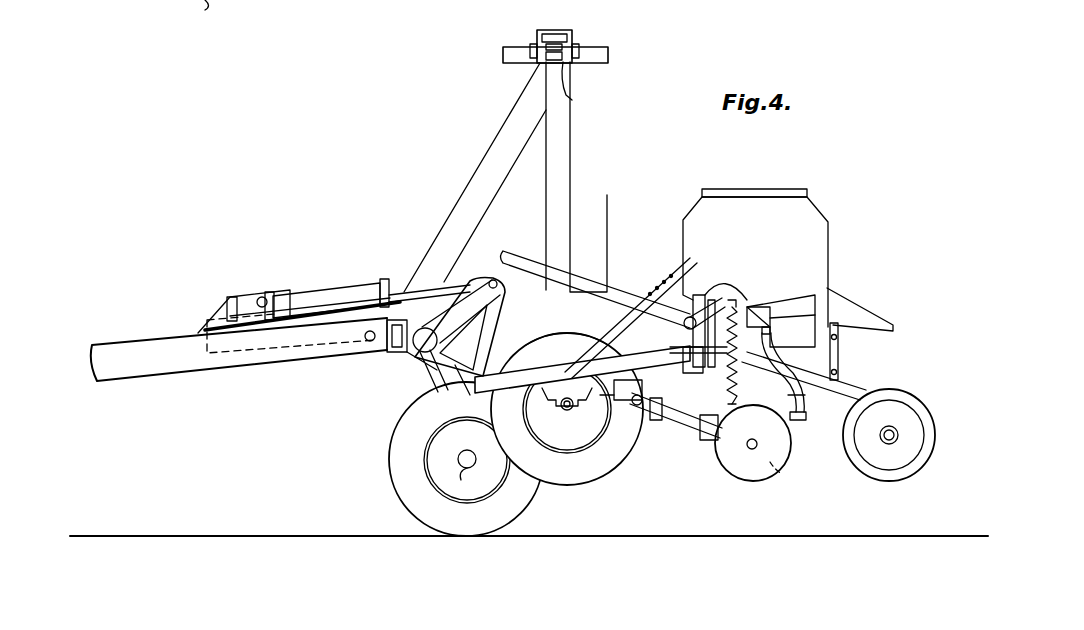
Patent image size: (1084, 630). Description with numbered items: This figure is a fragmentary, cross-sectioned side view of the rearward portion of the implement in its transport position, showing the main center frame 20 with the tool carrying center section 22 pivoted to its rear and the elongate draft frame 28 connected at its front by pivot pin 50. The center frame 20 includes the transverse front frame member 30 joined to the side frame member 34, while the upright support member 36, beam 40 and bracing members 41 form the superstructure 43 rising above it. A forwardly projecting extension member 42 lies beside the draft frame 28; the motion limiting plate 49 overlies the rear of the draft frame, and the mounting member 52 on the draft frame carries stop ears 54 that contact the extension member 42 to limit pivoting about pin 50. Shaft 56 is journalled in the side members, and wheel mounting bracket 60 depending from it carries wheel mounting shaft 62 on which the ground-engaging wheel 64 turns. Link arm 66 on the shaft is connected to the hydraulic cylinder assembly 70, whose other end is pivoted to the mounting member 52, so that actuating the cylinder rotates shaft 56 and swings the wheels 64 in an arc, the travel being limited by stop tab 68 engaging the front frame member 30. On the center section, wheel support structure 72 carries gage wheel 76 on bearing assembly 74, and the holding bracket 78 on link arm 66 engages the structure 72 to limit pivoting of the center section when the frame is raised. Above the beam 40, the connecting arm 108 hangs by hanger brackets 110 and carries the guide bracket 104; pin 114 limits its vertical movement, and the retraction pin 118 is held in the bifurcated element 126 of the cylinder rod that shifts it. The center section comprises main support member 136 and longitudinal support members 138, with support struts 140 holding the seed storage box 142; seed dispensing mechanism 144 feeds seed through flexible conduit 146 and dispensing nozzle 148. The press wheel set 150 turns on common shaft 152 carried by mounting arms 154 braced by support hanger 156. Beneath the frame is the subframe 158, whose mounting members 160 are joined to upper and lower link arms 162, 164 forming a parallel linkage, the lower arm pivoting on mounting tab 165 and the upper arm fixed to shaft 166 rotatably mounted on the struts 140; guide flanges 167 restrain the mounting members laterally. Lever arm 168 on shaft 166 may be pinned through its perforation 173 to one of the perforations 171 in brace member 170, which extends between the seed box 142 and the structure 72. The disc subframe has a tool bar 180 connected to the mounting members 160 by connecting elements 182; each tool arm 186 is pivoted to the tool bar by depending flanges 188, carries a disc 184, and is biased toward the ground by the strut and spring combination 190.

The main center frame 20 is at (510, 332).
The implement tool carrying center section 22 is at (838, 212).
The draft frame 28 is at (112, 348).
The front frame member 30 is at (393, 354).
The side frame member 34 is at (521, 342).
The upright support member 36 is at (572, 175).
The beam 40 is at (553, 30).
The bracing member 41 is at (482, 172).
The extension member 42 is at (217, 366).
The superstructure 43 is at (448, 94).
The motion limiting plate 49 is at (280, 300).
The pivot pin 50 is at (365, 340).
The mounting member 52 is at (239, 296).
The stop ears 54 is at (226, 322).
The shaft 56 is at (422, 330).
The wheel mounting bracket 60 is at (440, 382).
The wheel mounting shaft 62 is at (464, 474).
The ground-engaging wheel 64 is at (392, 481).
The link arm 66 is at (460, 312).
The stop tab 68 is at (420, 354).
The hydraulic cylinder assembly 70 is at (338, 286).
The wheel support structure 72 is at (509, 392).
The bearing assembly 74 is at (565, 412).
The gage wheel 76 is at (575, 477).
The holding bracket 78 is at (463, 385).
The guide bracket 104 is at (608, 56).
The connecting arm 108 is at (534, 62).
The hanger brackets 110 is at (566, 31).
The pin 114 is at (537, 44).
The retraction pin 118 is at (580, 62).
The bifurcated element 126 is at (570, 96).
The main support member 136 is at (685, 345).
The support members 138 is at (856, 312).
The support struts 140 is at (707, 300).
The seed storage box 142 is at (745, 200).
The seed dispensing mechanism 144 is at (780, 297).
The flexible conduit 146 is at (800, 411).
The dispensing nozzle 148 is at (796, 462).
The press wheel tools 150 is at (932, 401).
The common shaft 152 is at (888, 442).
The press wheel mounting arms 154 is at (862, 386).
The support hanger 156 is at (840, 350).
The subframe 158 is at (712, 470).
The mounting members 160 is at (750, 306).
The upper link arms 162 is at (738, 300).
The lower link arms 164 is at (753, 443).
The mounting tab 165 is at (710, 420).
The shaft 166 is at (700, 297).
The guide flanges 167 is at (737, 372).
The lever arm 168 is at (580, 270).
The brace member 170 is at (678, 273).
The perforations 171 is at (648, 285).
The perforation 173 is at (630, 296).
The tool bar 180 is at (620, 396).
The connecting elements 182 is at (665, 407).
The disc 184 is at (752, 476).
The tool arm 186 is at (675, 440).
The depending flanges 188 is at (625, 410).
The strut and spring combination 190 is at (786, 305).